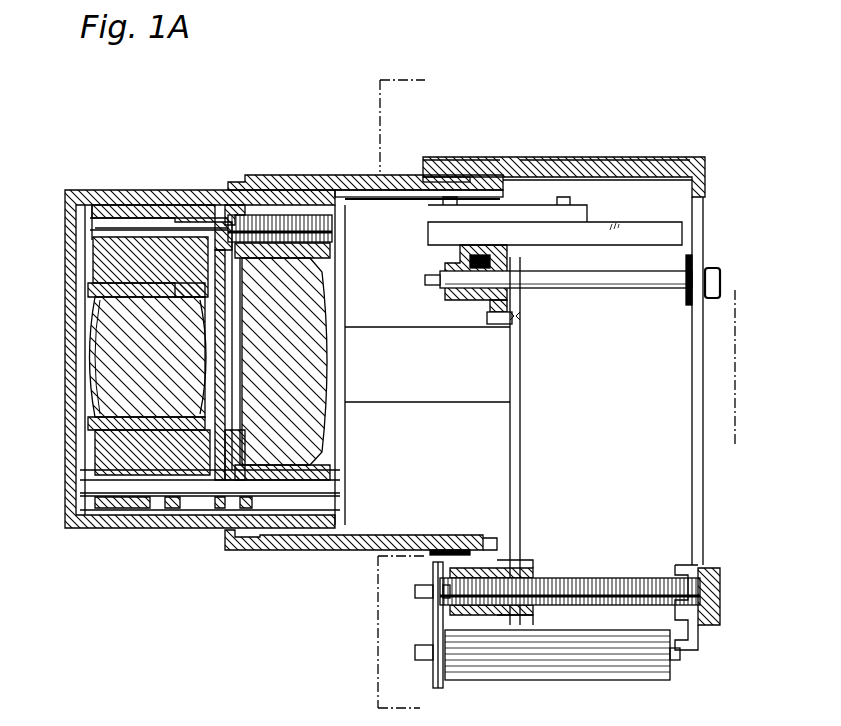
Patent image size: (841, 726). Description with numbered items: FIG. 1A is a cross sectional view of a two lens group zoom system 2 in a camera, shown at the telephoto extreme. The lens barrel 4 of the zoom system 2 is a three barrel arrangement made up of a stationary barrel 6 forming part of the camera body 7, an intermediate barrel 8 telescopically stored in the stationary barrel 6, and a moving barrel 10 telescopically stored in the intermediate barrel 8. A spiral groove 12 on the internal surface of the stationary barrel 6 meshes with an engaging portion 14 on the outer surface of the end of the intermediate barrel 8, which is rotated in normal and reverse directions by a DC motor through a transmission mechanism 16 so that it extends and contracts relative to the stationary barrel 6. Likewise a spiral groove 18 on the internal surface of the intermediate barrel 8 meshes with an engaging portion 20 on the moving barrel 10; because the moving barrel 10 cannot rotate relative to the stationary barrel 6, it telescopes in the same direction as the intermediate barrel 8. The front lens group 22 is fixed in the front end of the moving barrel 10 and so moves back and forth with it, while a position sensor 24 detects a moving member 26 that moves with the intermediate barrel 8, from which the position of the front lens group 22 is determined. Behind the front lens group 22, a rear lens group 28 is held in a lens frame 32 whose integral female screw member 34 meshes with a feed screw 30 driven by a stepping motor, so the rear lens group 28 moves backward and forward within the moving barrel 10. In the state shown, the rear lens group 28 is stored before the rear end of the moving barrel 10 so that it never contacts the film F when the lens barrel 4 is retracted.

The zoom system 2 is at (92, 124).
The lens barrel 4 is at (300, 555).
The stationary barrel 6 is at (619, 158).
The camera body 7 is at (378, 97).
The intermediate barrel 8 is at (401, 186).
The moving barrel 10 is at (115, 190).
The spiral groove 12 is at (561, 175).
The engaging portion 14 is at (461, 172).
The transmission mechanism 16 is at (605, 582).
The spiral groove 18 is at (370, 196).
The engaging portion 20 is at (296, 185).
The front lens group 22 is at (105, 345).
The position sensor 24 is at (627, 230).
The moving member 26 is at (523, 303).
The rear lens group 28 is at (318, 432).
The feed screw 30 is at (272, 220).
The lens frame 32 is at (340, 272).
The female screw member 34 is at (226, 205).
The film F is at (736, 380).